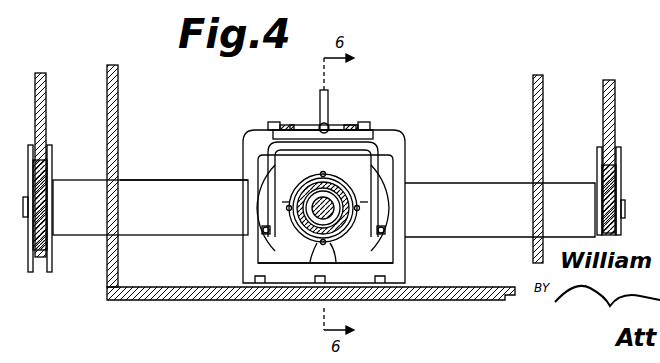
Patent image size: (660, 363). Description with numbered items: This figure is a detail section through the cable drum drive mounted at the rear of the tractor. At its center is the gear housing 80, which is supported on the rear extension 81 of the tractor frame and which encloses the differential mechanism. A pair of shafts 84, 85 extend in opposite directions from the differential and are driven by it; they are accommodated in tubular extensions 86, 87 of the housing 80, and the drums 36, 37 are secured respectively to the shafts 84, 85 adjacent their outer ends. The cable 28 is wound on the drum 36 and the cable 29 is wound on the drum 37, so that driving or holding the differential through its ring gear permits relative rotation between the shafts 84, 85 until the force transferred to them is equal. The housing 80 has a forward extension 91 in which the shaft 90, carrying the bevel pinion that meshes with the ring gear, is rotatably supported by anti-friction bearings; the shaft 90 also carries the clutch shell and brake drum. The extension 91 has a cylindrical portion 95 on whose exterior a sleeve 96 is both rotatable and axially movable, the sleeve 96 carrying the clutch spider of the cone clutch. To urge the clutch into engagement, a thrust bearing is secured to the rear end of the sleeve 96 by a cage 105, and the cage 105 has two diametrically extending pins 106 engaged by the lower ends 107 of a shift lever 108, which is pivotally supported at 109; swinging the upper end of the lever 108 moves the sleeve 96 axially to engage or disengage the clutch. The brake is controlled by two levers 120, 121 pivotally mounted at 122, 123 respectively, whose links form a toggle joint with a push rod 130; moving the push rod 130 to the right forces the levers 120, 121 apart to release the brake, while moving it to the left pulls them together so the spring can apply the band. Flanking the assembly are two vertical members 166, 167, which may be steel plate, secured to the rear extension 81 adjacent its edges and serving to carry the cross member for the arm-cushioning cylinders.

The cable 28 is at (47, 102).
The cable 29 is at (615, 112).
The drum 36 is at (52, 163).
The drum 37 is at (621, 185).
The gear housing 80 is at (405, 132).
The extension of the tractor frame 81 is at (176, 300).
The shaft 84 is at (53, 212).
The shaft 85 is at (625, 213).
The tubular extension 86 is at (162, 180).
The tubular extension 87 is at (470, 183).
The shaft 90 is at (340, 180).
The forward extension of the housing 91 is at (310, 182).
The cylindrical portion 95 is at (378, 160).
The sleeve 96 is at (336, 240).
The cage 105 is at (318, 262).
The pins 106 is at (321, 244).
The lower ends of the shift lever 107 is at (258, 190).
The shift lever 108 is at (318, 122).
The pivot of the shift lever 109 is at (262, 234).
The lever 120 is at (268, 125).
The lever 121 is at (365, 139).
The pivot of lever 120 122 is at (284, 125).
The pivot of lever 121 123 is at (360, 122).
The push rod 130 is at (328, 120).
The vertical member 166 is at (118, 90).
The vertical member 167 is at (533, 100).